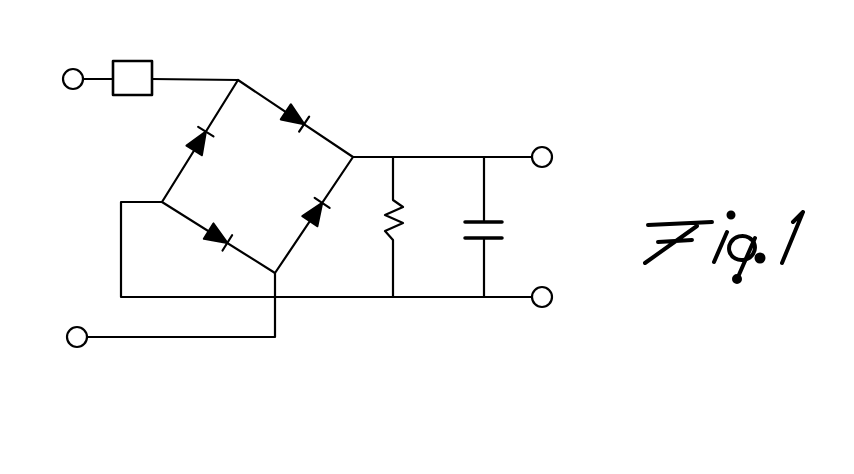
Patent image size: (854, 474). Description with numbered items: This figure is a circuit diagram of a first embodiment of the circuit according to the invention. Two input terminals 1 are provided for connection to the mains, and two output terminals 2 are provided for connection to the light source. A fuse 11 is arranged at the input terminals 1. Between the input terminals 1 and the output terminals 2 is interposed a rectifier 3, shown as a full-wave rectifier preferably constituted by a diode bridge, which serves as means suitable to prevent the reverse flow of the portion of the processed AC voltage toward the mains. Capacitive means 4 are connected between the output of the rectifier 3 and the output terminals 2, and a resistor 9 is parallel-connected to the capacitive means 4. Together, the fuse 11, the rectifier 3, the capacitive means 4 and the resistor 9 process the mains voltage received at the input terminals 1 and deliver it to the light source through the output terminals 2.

The input terminals 1 is at (77, 327).
The fuse 11 is at (140, 58).
The rectifier 3 is at (336, 135).
The resistor 9 is at (390, 235).
The capacitive means 4 is at (482, 220).
The output terminals 2 is at (542, 168).